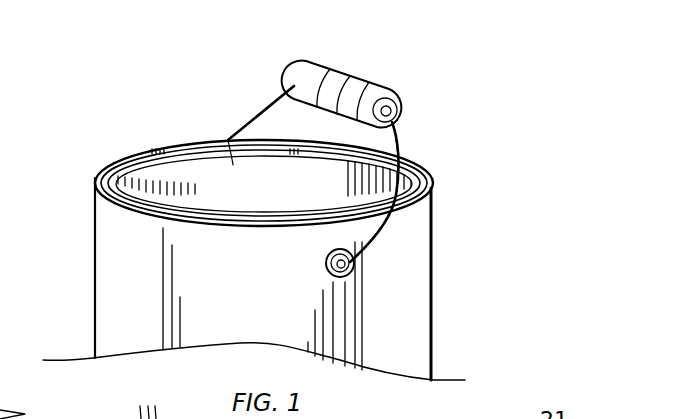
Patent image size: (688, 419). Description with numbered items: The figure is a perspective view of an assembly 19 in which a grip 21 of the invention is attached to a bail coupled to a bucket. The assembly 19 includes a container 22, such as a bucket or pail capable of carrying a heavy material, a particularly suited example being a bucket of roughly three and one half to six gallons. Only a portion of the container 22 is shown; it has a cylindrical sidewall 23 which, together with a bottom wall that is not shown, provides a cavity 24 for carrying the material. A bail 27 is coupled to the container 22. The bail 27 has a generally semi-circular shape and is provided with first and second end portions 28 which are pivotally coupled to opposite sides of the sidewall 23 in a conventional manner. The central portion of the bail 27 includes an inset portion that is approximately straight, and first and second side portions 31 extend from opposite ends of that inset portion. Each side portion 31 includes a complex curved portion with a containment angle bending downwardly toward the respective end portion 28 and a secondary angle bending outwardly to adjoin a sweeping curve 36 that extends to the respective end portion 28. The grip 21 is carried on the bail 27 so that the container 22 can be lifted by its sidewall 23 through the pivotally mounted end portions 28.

The assembly 19 is at (308, 195).
The grip 21 is at (404, 90).
The container 22 is at (276, 229).
The cylindrical sidewall 23 is at (436, 258).
The cavity 24 is at (193, 172).
The bail 27 is at (404, 140).
The end portion 28 is at (358, 254).
The side portion 31 is at (250, 106).
The sweeping curve 36 is at (246, 115).